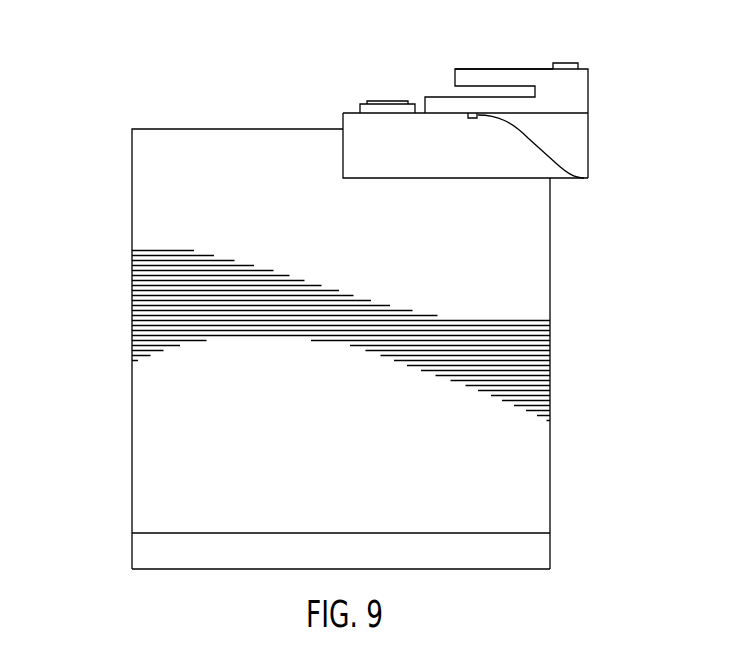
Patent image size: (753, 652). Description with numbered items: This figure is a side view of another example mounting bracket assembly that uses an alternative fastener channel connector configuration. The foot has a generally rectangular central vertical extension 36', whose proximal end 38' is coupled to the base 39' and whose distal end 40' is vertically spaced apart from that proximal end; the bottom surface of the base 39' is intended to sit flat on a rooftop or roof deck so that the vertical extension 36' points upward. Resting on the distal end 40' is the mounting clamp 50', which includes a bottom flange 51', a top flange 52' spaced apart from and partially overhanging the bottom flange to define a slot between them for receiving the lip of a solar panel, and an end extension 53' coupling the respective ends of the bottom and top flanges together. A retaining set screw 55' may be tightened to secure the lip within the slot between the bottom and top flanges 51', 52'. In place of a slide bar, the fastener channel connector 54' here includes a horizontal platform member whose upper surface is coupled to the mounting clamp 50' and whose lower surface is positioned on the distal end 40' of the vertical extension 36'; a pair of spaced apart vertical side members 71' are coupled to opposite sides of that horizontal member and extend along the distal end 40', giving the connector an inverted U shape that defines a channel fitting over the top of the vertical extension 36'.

The distal end 40' is at (302, 346).
The vertical extension 36' is at (294, 336).
The proximal end 38' is at (302, 514).
The base 39' is at (390, 540).
The mounting clamp 50' is at (512, 132).
The bottom flange 51' is at (463, 34).
The top flange 52' is at (539, 40).
The end extension 53' is at (547, 79).
The fastener channel connector 54' is at (580, 226).
The retaining set screw 55' is at (571, 159).
The vertical side member 71' is at (613, 145).